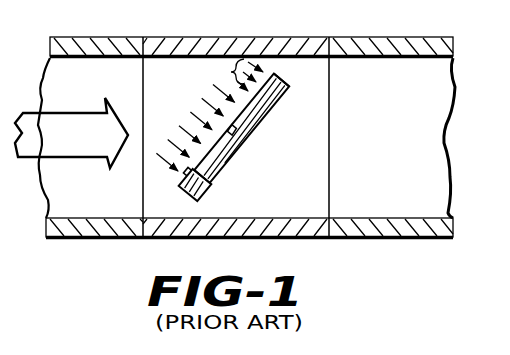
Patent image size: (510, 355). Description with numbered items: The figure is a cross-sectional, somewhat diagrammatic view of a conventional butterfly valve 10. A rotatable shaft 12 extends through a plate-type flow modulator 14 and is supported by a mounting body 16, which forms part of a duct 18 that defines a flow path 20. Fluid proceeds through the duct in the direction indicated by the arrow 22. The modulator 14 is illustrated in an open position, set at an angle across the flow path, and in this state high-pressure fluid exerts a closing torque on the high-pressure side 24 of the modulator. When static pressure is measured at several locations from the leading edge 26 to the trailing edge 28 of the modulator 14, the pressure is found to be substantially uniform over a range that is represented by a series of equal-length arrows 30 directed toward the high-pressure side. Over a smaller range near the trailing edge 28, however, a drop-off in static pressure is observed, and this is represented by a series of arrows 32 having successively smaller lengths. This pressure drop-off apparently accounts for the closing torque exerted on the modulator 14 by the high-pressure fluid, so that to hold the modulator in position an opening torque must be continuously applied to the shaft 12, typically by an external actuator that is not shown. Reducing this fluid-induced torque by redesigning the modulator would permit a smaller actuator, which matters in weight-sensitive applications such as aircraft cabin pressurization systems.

The butterfly valve 10 is at (355, 120).
The rotatable shaft 12 is at (249, 141).
The plate-type flow modulator 14 is at (268, 118).
The mounting body 16 is at (157, 38).
The duct 18 is at (133, 33).
The flow path 20 is at (100, 88).
The arrow 22 is at (60, 159).
The high-pressure side 24 is at (211, 183).
The leading edge 26 is at (181, 197).
The trailing edge 28 is at (289, 79).
The series of equal-length arrows 30 is at (210, 83).
The series of arrows having successively smaller lengths 32 is at (249, 38).